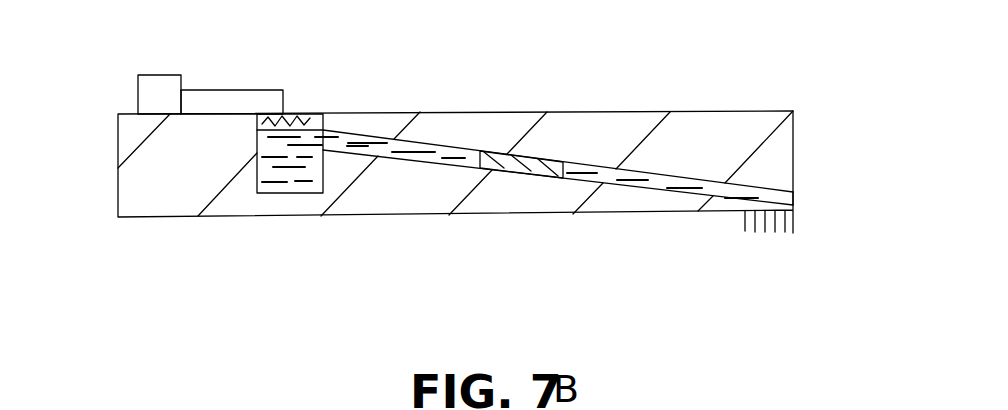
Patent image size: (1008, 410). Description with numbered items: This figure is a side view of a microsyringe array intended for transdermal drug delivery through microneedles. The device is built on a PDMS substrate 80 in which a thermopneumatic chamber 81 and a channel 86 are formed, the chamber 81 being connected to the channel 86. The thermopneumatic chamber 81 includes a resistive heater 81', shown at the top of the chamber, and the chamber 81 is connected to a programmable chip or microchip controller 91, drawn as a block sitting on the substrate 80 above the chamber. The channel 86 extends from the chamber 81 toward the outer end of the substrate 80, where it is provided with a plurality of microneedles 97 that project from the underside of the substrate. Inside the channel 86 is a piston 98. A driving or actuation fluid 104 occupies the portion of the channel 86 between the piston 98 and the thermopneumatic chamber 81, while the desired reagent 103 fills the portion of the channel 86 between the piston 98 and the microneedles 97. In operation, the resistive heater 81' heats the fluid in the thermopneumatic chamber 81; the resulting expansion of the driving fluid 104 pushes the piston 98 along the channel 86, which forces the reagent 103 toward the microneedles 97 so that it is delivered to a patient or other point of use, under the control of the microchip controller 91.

The PDMS substrate 80 is at (387, 200).
The thermopneumatic chamber 81 is at (276, 192).
The resistive heater 81' is at (317, 82).
The microchip controller 91 is at (150, 75).
The piston 98 is at (545, 158).
The reagent 103 is at (640, 184).
The driving fluid 104 is at (447, 156).
The channel 86 is at (793, 200).
The microneedles 97 is at (772, 258).